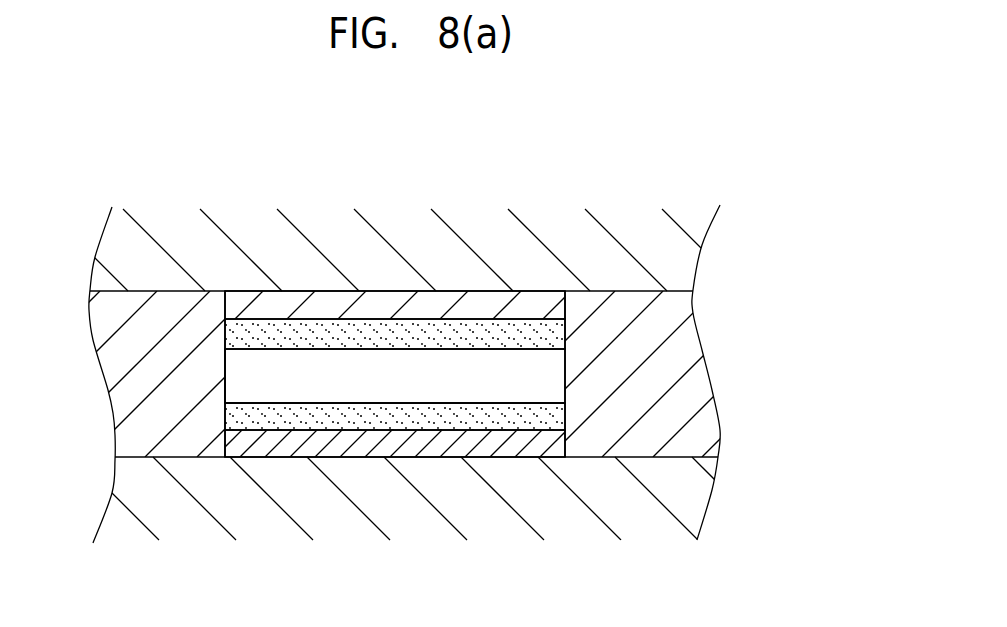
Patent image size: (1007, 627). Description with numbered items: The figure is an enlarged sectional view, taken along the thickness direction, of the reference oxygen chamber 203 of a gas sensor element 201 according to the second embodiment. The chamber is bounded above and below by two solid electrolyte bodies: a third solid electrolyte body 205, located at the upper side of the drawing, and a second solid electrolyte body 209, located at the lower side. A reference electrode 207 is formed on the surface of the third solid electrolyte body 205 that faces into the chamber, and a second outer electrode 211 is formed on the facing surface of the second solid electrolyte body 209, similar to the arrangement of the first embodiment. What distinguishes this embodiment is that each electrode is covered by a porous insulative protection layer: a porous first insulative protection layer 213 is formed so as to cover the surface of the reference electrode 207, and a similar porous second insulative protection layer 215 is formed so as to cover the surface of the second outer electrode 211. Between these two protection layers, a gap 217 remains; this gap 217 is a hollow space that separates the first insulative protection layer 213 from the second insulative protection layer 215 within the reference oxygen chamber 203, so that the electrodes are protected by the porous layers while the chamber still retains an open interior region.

The gas sensor element 201 is at (634, 151).
The reference oxygen chamber 203 is at (522, 373).
The third solid electrolyte body 205 is at (682, 262).
The reference electrode 207 is at (447, 305).
The second solid electrolyte body 209 is at (690, 502).
The second outer electrode 211 is at (490, 445).
The first insulative protection layer 213 is at (333, 336).
The second insulative protection layer 215 is at (357, 418).
The gap 217 is at (263, 378).